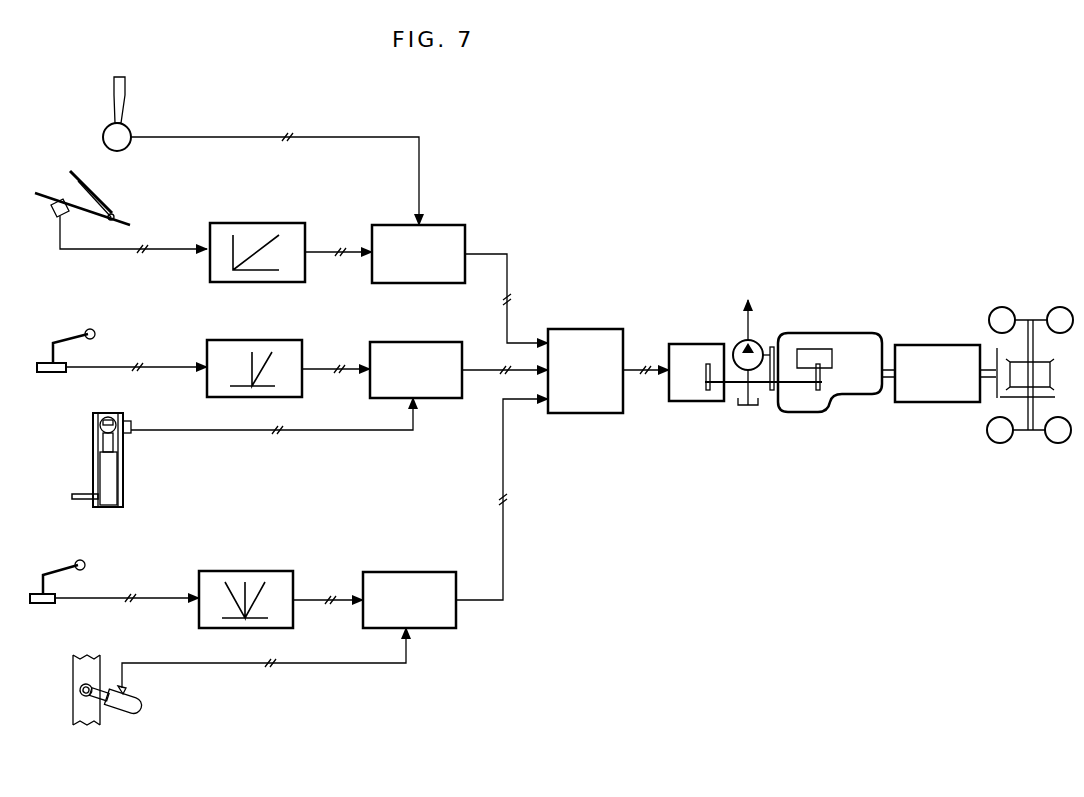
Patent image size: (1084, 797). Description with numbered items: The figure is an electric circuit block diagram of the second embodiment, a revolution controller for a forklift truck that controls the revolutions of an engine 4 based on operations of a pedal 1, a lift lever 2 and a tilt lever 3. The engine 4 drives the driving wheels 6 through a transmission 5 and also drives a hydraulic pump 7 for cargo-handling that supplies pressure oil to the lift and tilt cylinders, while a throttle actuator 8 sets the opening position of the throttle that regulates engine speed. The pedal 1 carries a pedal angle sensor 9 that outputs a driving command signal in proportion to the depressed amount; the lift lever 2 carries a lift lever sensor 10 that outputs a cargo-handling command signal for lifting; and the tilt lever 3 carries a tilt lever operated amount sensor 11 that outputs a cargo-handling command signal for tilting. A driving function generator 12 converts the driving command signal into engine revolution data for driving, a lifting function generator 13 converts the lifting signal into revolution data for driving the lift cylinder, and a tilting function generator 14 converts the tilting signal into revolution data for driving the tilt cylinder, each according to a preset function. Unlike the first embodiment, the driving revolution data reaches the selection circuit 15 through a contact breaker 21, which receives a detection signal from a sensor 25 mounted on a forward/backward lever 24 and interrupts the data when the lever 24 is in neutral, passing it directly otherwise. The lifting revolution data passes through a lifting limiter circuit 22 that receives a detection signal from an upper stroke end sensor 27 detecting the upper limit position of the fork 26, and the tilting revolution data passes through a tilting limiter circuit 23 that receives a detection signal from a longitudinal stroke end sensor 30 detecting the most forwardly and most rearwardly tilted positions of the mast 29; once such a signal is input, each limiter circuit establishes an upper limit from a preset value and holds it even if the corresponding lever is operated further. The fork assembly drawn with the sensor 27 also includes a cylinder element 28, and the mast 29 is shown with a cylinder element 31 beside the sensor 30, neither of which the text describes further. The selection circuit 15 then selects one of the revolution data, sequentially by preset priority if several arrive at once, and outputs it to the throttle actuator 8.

The pedal 1 is at (87, 198).
The lift lever 2 is at (75, 330).
The tilt lever 3 is at (69, 562).
The engine 4 is at (840, 333).
The transmission 5 is at (937, 345).
The driving wheels 6 is at (1058, 308).
The hydraulic pump 7 is at (763, 350).
The throttle actuator 8 is at (700, 344).
The pedal angle sensor 9 is at (52, 213).
The lift lever sensor 10 is at (48, 372).
The tilt lever operated amount sensor 11 is at (46, 603).
The driving function generator 12 is at (288, 223).
The lifting function generator 13 is at (289, 340).
The tilting function generator 14 is at (270, 571).
The selection circuit 15 is at (589, 329).
The contact breaker 21 is at (451, 226).
The lifting limiter circuit 22 is at (446, 341).
The tilting limiter circuit 23 is at (429, 572).
The forward/backward lever 24 is at (125, 85).
The sensor 25 is at (127, 146).
The fork 26 is at (77, 494).
The upper stroke end sensor 27 is at (132, 421).
The hydraulic cylinder 28 is at (110, 470).
The mast 29 is at (73, 673).
The longitudinal stroke end sensor 30 is at (126, 688).
The cylinder 31 is at (120, 714).